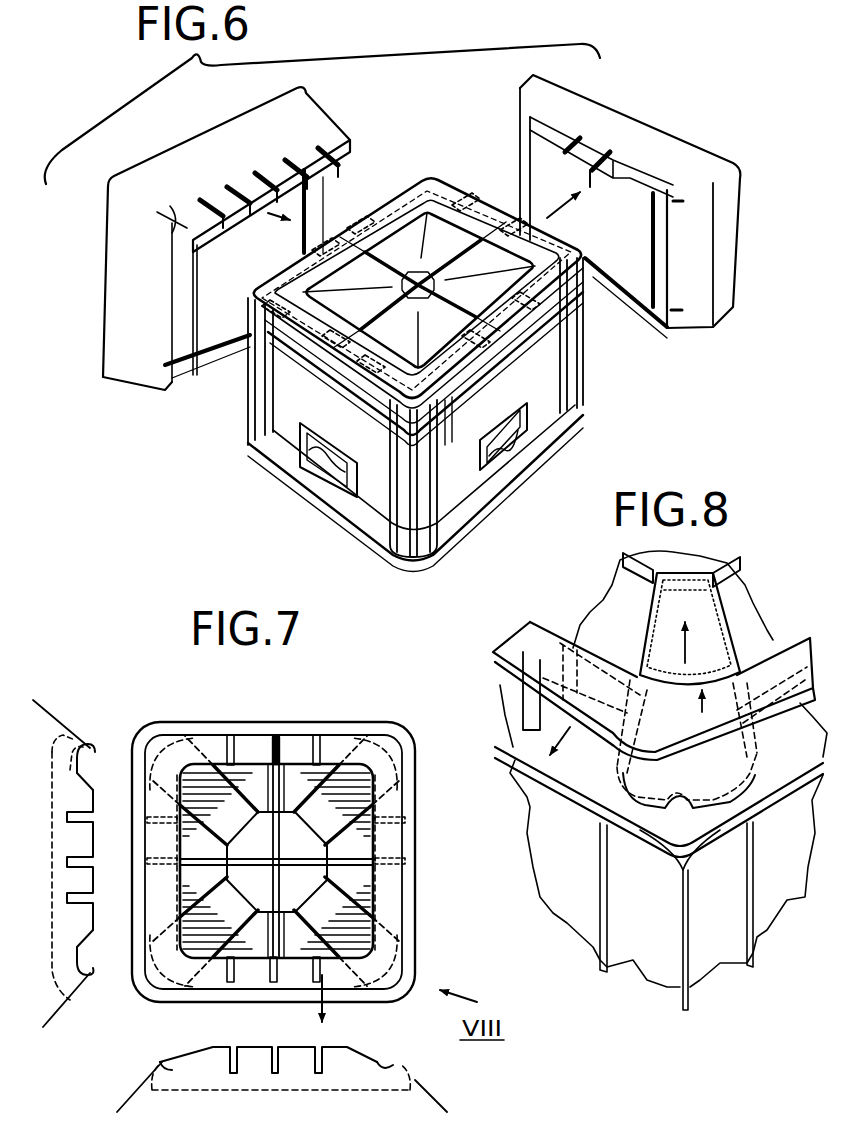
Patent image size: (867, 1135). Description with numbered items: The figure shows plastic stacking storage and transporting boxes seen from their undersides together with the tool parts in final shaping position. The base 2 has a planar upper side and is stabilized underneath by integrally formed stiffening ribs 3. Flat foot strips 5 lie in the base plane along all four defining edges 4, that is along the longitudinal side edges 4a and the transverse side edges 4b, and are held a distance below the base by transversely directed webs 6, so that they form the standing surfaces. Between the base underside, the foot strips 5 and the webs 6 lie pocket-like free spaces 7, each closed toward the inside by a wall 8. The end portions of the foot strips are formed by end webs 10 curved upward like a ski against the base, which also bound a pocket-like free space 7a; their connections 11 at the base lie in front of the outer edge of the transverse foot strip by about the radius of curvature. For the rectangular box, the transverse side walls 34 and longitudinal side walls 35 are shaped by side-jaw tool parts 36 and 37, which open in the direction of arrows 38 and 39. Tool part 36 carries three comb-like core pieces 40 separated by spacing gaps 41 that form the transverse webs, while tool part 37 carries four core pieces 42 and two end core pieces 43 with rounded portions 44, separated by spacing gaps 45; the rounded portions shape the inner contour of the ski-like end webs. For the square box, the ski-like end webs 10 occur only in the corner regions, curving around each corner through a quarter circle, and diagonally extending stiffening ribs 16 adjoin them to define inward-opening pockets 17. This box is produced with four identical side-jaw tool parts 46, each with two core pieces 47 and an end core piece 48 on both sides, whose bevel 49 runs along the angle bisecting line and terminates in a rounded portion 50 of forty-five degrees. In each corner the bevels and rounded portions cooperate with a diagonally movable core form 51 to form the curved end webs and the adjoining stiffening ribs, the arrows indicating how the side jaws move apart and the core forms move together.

In FIG. 6, the base 2 is at (445, 235).
In FIG. 7, the base 2 is at (276, 735).
In FIG. 8, the base 2 is at (735, 590).
In FIG. 6, the stiffening ribs 3 is at (438, 272).
In FIG. 7, the stiffening ribs 3 is at (262, 770).
In FIG. 8, the stiffening ribs 3 is at (625, 575).
In FIG. 6, the defining edges 4 is at (262, 292).
In FIG. 7, the defining edges 4 is at (210, 735).
In FIG. 8, the defining edges 4 is at (520, 765).
In FIG. 6, the longitudinal side edges 4a is at (540, 392).
In FIG. 6, the transverse side edges 4b is at (340, 392).
In FIG. 6, the flat foot strips 5 is at (365, 230).
In FIG. 7, the flat foot strips 5 is at (350, 735).
In FIG. 8, the flat foot strips 5 is at (510, 640).
In FIG. 6, the webs 6 is at (282, 275).
In FIG. 7, the webs 6 is at (240, 740).
In FIG. 8, the webs 6 is at (523, 700).
In FIG. 6, the pocket-like free spaces 7 is at (247, 385).
In FIG. 6, the pocket-like free space 7a is at (445, 420).
In FIG. 6, the wall 8 is at (395, 285).
In FIG. 7, the wall 8 is at (186, 845).
In FIG. 6, the end webs 10 is at (245, 300).
In FIG. 7, the end webs 10 is at (158, 730).
In FIG. 8, the end webs 10 is at (662, 777).
In FIG. 6, the connections 11 is at (250, 362).
In FIG. 8, the connections 11 is at (755, 785).
In FIG. 7, the diagonally extending stiffening ribs 16 is at (205, 755).
In FIG. 8, the diagonally extending stiffening ribs 16 is at (645, 642).
In FIG. 7, the pockets 17 is at (165, 790).
In FIG. 8, the pockets 17 is at (706, 714).
In FIG. 6, the transverse side walls 34 is at (305, 423).
In FIG. 6, the longitudinal side walls 35 is at (461, 493).
In FIG. 6, the tool part 36 is at (688, 143).
In FIG. 6, the tool part 37 is at (176, 160).
In FIG. 6, the arrow 38 is at (515, 185).
In FIG. 6, the arrow 39 is at (200, 228).
In FIG. 6, the core pieces 40 is at (620, 160).
In FIG. 6, the spacing gaps 41 is at (572, 170).
In FIG. 6, the core pieces 42 is at (320, 160).
In FIG. 6, the end core pieces 43 is at (180, 230).
In FIG. 6, the rounded portions 44 is at (175, 240).
In FIG. 6, the spacing gaps 45 is at (212, 206).
In FIG. 7, the tool parts 46 is at (53, 720).
In FIG. 7, the core pieces 47 is at (67, 870).
In FIG. 7, the end core piece 48 is at (68, 790).
In FIG. 7, the bevel 49 is at (87, 773).
In FIG. 7, the rounded portion 50 is at (90, 742).
In FIG. 8, the core form 51 is at (675, 668).